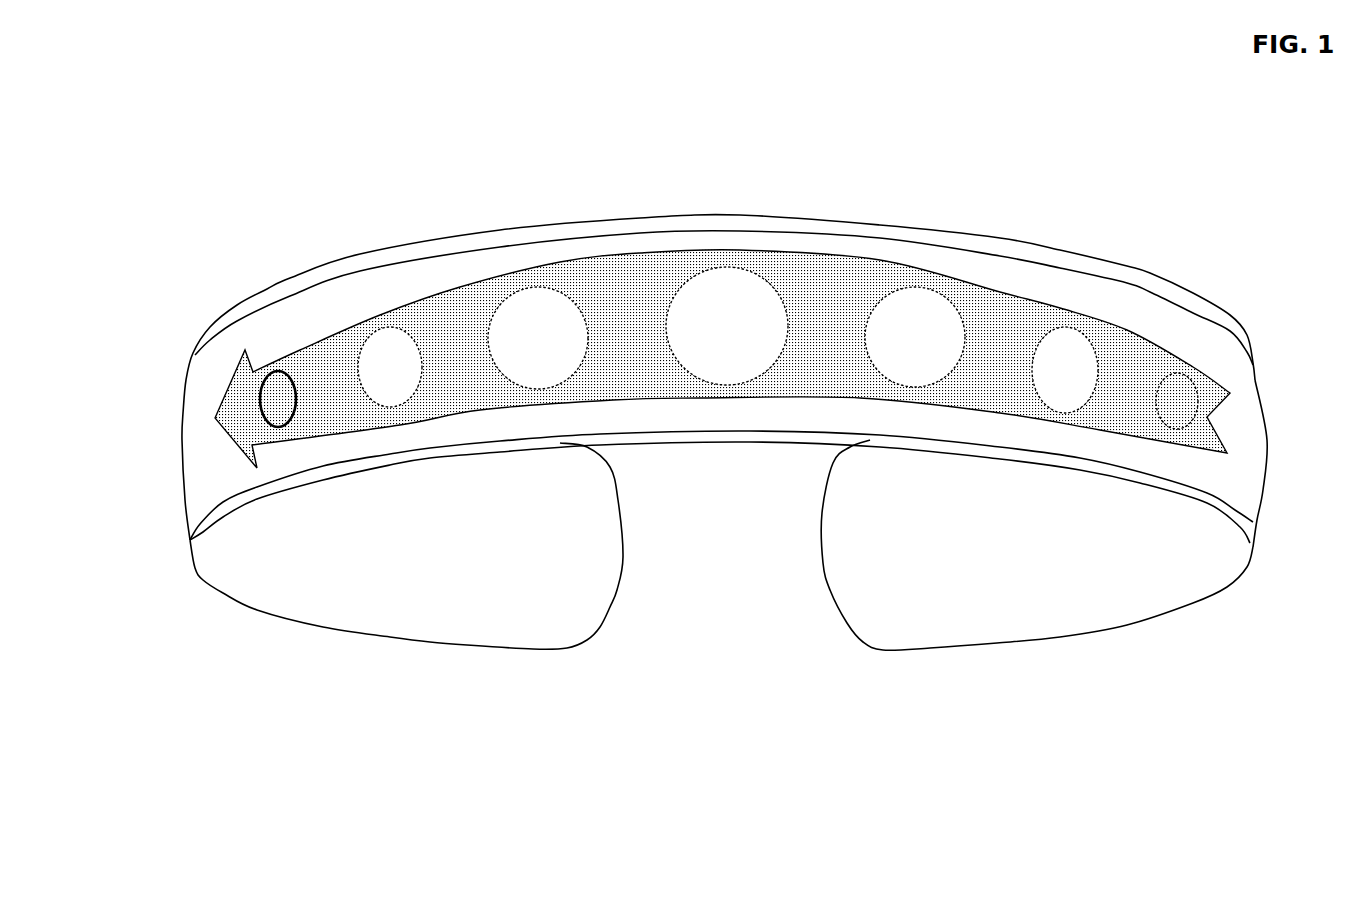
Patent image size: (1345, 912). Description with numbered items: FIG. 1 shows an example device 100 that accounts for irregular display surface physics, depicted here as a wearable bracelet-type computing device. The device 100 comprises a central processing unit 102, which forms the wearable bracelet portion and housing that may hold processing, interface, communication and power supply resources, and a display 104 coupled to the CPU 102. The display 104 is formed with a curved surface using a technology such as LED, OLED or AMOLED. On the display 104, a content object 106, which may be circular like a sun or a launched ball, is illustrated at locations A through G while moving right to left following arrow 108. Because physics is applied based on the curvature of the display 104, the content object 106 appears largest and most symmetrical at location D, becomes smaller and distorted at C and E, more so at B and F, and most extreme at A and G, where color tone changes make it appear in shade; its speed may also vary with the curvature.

The device 100 is at (158, 213).
The central processing unit 102 is at (213, 313).
The display 104 is at (183, 397).
The content object 106 is at (293, 372).
The arrow 108 is at (410, 300).